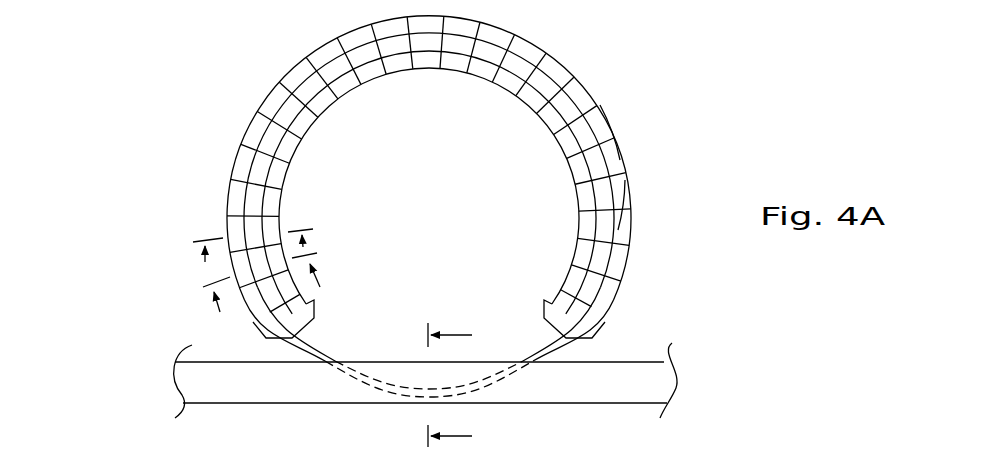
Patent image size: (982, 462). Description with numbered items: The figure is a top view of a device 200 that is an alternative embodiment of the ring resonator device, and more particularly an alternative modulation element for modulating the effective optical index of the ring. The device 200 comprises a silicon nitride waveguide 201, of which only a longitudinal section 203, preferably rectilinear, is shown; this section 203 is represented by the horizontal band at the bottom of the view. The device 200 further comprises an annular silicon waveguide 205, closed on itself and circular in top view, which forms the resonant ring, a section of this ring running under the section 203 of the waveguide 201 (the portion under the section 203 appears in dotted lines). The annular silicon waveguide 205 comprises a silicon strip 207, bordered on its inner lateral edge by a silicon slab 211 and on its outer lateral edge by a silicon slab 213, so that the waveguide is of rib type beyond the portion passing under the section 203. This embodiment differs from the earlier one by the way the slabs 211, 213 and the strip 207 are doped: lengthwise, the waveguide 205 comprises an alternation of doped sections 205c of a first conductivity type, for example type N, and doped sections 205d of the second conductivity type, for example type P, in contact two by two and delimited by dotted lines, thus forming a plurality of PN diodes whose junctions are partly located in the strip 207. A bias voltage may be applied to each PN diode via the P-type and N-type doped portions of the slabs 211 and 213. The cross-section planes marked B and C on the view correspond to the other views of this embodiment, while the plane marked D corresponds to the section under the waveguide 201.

The device 200 is at (138, 72).
The silicon nitride waveguide 201 is at (693, 383).
The longitudinal section 203 is at (623, 393).
The annular silicon waveguide 205 is at (227, 178).
The doped section 205c is at (632, 178).
The doped section 205d is at (627, 140).
The silicon strip 207 is at (578, 115).
The silicon slab 211 is at (605, 134).
The silicon slab 213 is at (568, 76).